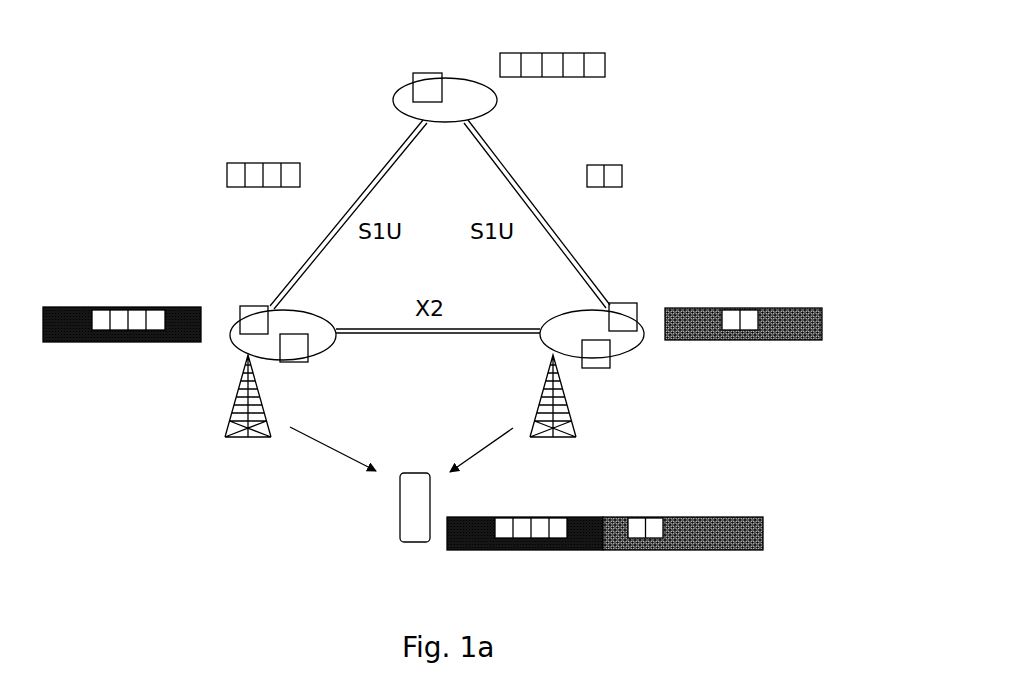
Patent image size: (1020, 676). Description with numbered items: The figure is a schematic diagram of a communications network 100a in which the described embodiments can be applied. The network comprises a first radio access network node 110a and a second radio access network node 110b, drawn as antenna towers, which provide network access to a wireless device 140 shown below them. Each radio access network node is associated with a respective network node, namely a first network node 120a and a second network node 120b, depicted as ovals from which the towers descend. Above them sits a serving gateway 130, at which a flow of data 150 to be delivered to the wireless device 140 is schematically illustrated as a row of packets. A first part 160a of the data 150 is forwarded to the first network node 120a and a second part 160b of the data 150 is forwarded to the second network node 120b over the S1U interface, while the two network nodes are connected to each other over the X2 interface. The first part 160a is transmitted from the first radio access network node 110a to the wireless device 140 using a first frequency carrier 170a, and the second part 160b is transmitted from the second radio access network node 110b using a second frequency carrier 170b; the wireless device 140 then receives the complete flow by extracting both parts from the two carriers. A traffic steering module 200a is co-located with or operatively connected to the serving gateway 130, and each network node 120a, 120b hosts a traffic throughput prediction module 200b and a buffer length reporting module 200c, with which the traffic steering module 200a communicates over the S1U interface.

The communications network 100a is at (778, 62).
The first radio access network node 110a is at (233, 423).
The second radio access network node 110b is at (570, 420).
The first network node 120a is at (318, 318).
The second network node 120b is at (562, 316).
The serving gateway 130 is at (477, 108).
The wireless device 140 is at (407, 536).
The flow of data 150 is at (606, 65).
The first part of the data 160a is at (226, 178).
The second part of the data 160b is at (623, 175).
The first frequency carrier 170a is at (62, 344).
The second frequency carrier 170b is at (800, 342).
The traffic steering module 200a is at (413, 83).
The traffic throughput prediction module 200b is at (240, 320).
The buffer length reporting module 200c is at (310, 348).